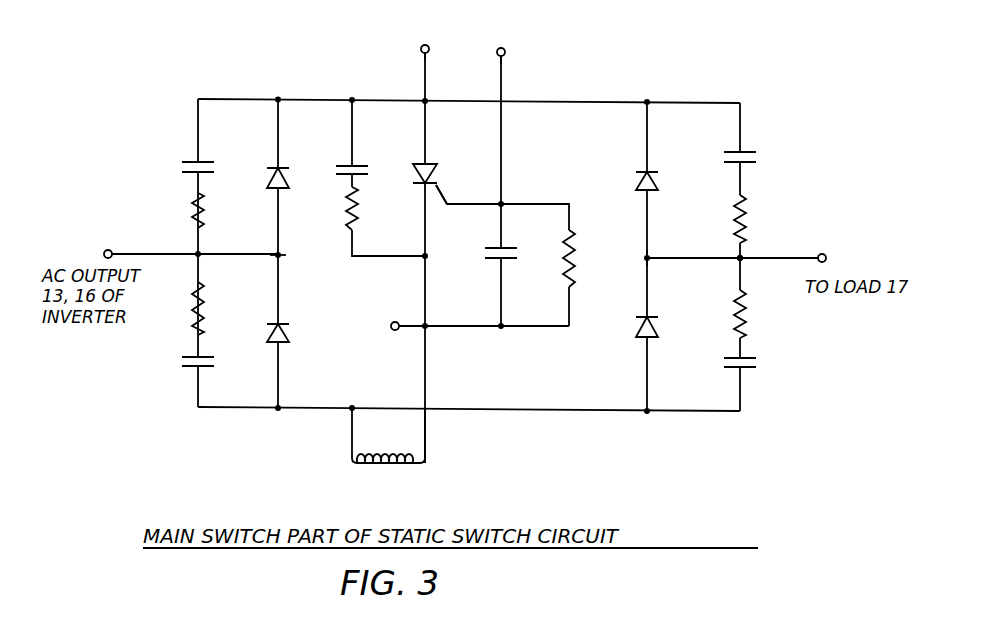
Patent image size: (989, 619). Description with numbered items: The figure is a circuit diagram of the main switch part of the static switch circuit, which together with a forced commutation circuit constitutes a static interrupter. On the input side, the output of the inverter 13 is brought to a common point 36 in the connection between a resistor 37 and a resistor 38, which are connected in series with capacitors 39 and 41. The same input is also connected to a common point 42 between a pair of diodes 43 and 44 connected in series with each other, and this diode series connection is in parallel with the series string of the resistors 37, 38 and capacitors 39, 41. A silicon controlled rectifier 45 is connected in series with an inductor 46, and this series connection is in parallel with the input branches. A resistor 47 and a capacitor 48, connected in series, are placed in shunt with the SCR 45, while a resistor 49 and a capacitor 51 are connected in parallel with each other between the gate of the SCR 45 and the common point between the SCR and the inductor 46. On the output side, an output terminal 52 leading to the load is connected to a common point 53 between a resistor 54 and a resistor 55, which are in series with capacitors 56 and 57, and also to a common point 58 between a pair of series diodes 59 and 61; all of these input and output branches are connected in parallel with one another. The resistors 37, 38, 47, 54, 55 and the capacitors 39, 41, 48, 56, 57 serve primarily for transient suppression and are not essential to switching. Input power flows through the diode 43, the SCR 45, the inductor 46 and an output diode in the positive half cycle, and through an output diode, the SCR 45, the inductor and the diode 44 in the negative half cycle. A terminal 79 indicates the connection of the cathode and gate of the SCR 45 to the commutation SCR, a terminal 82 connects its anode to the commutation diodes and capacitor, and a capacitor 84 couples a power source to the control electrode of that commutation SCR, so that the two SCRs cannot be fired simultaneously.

The AC output terminal of inverter 13 is at (117, 254).
The common point 36 is at (202, 254).
The resistor 37 is at (194, 218).
The resistor 38 is at (194, 332).
The capacitor 39 is at (188, 168).
The capacitor 41 is at (213, 361).
The common point 42 is at (282, 257).
The diode 43 is at (284, 188).
The diode 44 is at (290, 338).
The silicon controlled rectifier 45 is at (430, 168).
The inductor 46 is at (410, 454).
The resistor 47 is at (354, 211).
The capacitor 48 is at (342, 170).
The resistor 49 is at (486, 254).
The capacitor 51 is at (566, 278).
The output terminal 52 is at (826, 258).
The common point 53 is at (736, 258).
The resistor 54 is at (736, 240).
The resistor 55 is at (734, 316).
The capacitor 56 is at (758, 160).
The capacitor 57 is at (756, 364).
The common point 58 is at (645, 259).
The diode 59 is at (636, 183).
The diode 61 is at (638, 326).
The terminal 79 is at (391, 323).
The terminal 82 is at (425, 46).
The capacitor 84 is at (504, 49).